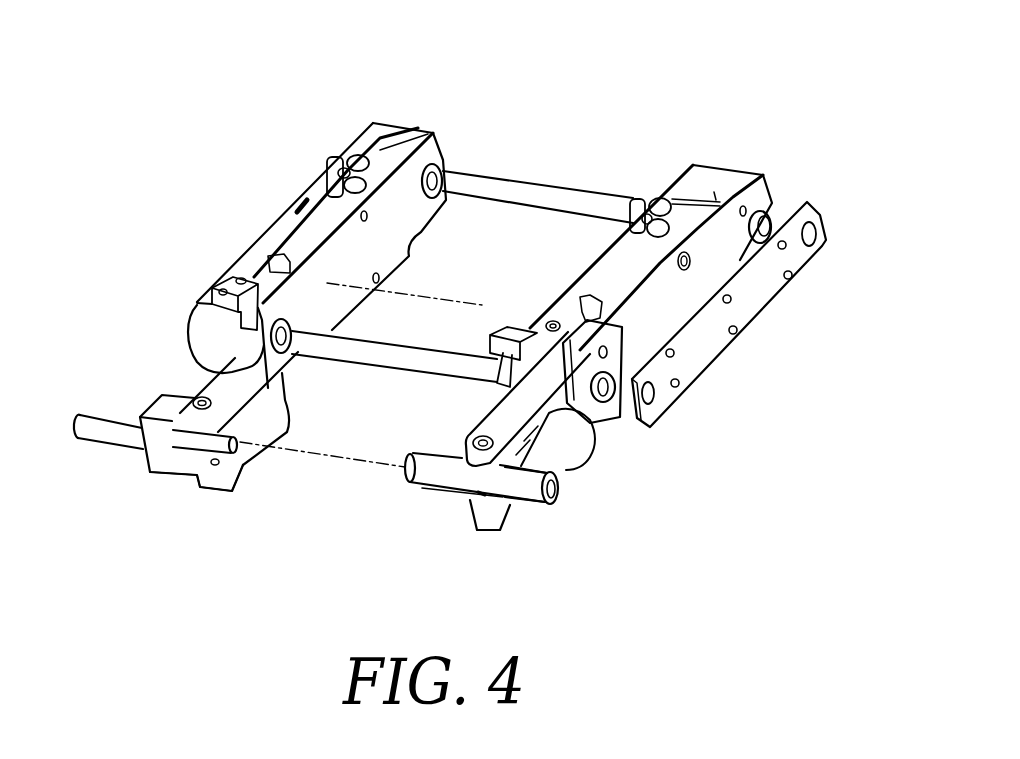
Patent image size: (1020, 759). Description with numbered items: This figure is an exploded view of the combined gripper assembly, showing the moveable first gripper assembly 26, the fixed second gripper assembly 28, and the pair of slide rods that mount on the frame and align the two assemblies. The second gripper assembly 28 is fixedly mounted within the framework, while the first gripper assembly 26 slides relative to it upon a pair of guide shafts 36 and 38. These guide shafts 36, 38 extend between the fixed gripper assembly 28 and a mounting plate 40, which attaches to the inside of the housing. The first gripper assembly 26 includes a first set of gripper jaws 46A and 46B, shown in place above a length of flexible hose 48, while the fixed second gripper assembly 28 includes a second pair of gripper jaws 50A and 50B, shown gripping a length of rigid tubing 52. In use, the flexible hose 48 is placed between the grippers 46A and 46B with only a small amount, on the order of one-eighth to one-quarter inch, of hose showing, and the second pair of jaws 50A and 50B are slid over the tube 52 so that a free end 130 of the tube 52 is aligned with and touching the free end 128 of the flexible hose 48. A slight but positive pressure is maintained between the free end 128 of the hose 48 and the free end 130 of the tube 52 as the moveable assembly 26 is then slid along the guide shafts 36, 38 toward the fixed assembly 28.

The first gripper assembly 26 is at (780, 173).
The second gripper assembly 28 is at (399, 108).
The guide shaft 36 is at (547, 182).
The guide shaft 38 is at (400, 367).
The mounting plate 40 is at (733, 343).
The gripper jaw 46A is at (443, 462).
The gripper jaw 46B is at (453, 498).
The flexible hose 48 is at (541, 503).
The gripper jaw 50A is at (156, 404).
The gripper jaw 50B is at (170, 464).
The rigid tubing 52 is at (131, 450).
The free end of flexible hose 128 is at (403, 468).
The free end of tube 130 is at (238, 450).